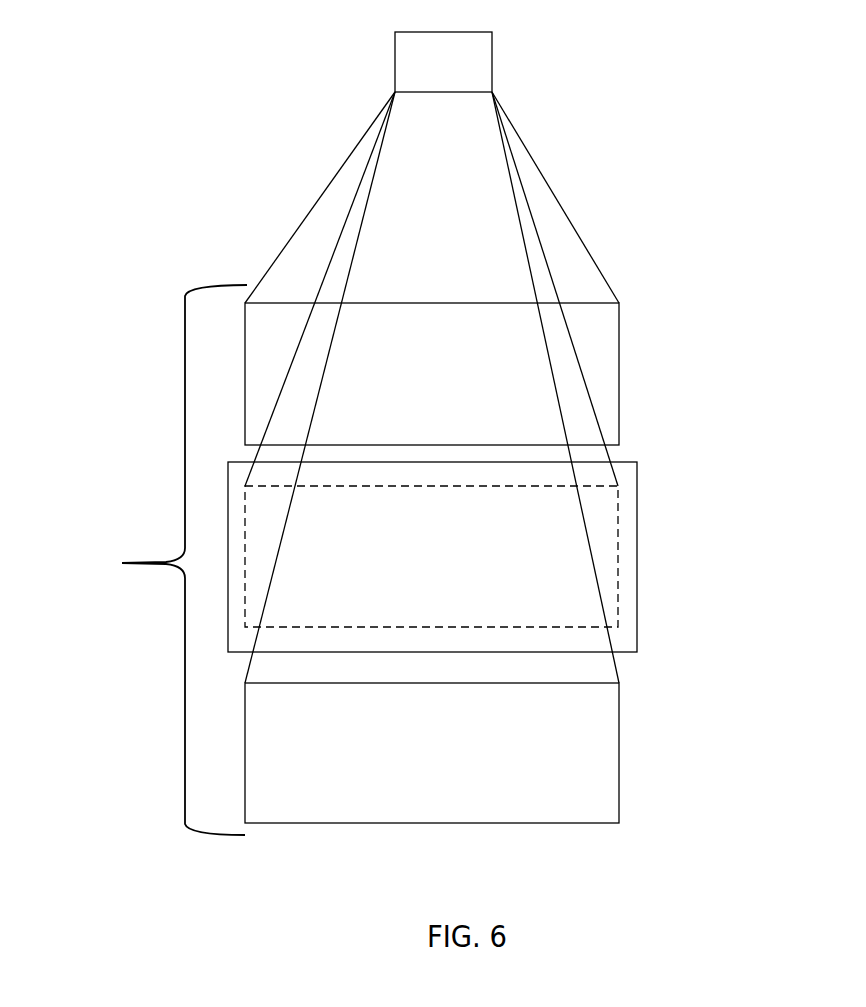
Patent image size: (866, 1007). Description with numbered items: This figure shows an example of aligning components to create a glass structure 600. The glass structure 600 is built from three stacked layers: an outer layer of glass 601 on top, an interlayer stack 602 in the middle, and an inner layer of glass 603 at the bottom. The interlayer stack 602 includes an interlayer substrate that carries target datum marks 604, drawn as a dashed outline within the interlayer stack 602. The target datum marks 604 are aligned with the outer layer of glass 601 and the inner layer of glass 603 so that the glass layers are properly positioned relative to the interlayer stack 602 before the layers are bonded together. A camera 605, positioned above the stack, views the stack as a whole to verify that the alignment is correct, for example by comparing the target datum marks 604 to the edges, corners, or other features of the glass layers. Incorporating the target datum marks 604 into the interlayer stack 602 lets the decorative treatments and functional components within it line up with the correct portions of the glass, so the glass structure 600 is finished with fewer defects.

The glass structure 600 is at (145, 560).
The outer layer of glass 601 is at (432, 374).
The interlayer stack 602 is at (432, 557).
The inner layer of glass 603 is at (432, 753).
The target datum marks 604 is at (620, 557).
The camera 605 is at (432, 357).